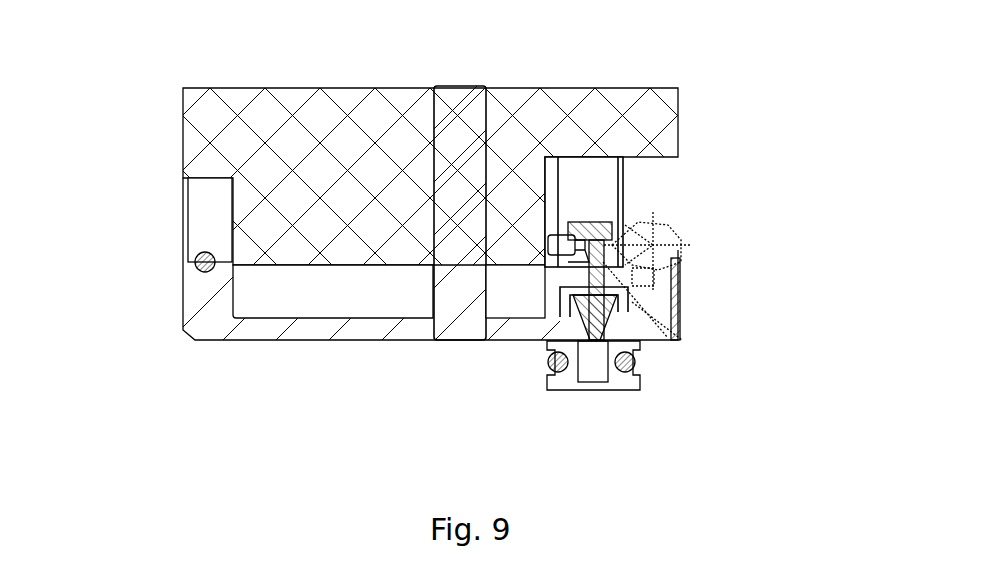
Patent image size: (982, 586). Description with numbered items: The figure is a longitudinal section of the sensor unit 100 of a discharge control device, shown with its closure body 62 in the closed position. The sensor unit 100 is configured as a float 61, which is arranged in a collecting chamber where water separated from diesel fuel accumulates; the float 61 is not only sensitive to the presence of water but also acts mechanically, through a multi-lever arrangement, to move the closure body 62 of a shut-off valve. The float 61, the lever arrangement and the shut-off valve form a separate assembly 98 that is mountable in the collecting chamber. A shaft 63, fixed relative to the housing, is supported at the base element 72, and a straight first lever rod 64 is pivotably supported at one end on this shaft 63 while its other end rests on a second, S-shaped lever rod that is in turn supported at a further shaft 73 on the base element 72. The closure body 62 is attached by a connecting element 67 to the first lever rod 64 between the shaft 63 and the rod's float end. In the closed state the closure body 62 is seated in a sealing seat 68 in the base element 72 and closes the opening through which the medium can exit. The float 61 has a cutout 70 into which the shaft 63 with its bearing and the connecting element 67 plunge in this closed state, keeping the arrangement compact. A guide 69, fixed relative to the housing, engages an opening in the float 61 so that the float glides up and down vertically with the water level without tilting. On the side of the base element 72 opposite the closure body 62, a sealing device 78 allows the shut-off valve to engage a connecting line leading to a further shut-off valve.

The sensor unit 100 is at (180, 110).
The separate assembly 98 is at (795, 108).
The float 61 is at (346, 140).
The base element 72 is at (447, 333).
The guide 69 is at (433, 292).
The shaft 73 is at (198, 270).
The cutout 70 is at (545, 178).
The connecting element 67 is at (560, 270).
The first lever rod 64 is at (558, 237).
The shaft 63 is at (657, 237).
The closure body 62 is at (578, 312).
The sealing seat 68 is at (612, 305).
The sealing device 78 is at (628, 387).